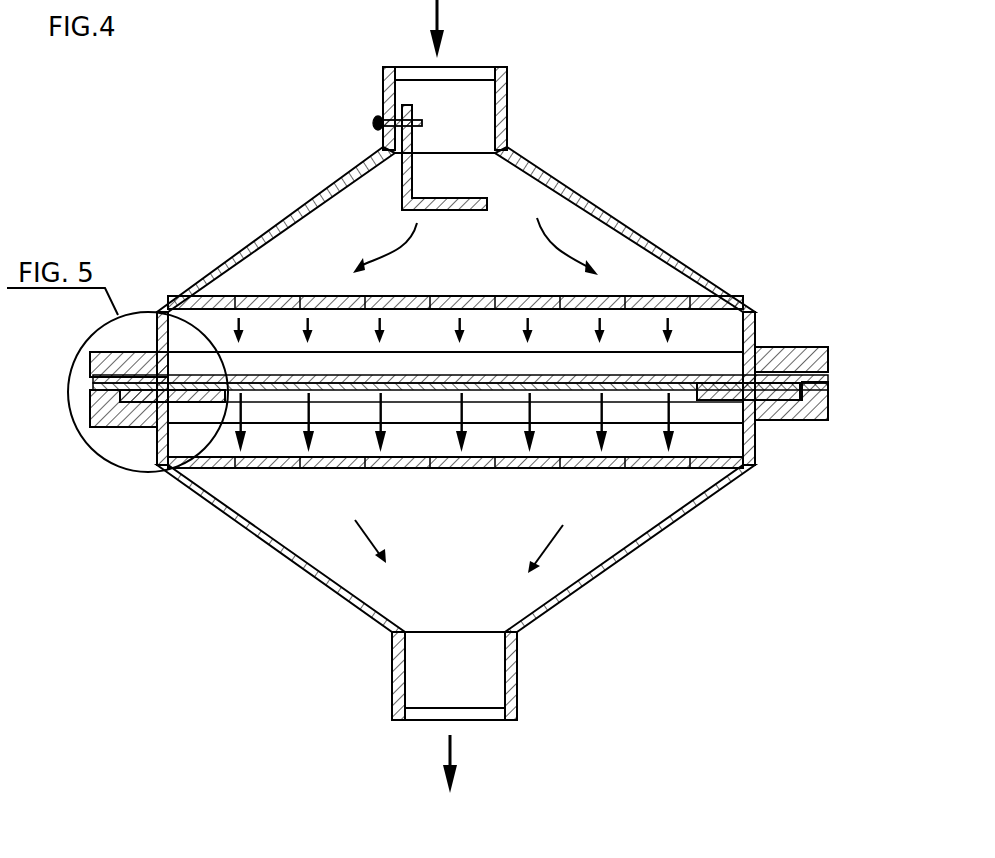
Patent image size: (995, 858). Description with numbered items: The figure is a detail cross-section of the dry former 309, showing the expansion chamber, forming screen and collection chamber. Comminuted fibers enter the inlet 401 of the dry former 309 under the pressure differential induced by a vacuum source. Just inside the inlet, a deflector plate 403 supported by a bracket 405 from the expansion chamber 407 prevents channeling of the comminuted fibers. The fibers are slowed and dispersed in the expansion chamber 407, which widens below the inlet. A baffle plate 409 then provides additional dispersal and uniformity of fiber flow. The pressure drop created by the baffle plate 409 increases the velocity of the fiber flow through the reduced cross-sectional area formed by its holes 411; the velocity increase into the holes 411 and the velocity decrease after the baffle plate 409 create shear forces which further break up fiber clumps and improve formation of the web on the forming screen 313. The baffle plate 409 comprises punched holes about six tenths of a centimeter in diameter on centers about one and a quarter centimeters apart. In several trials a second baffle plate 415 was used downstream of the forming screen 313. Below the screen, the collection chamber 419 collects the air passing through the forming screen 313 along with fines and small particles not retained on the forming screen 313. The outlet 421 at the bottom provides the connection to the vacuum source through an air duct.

The dry former 309 is at (226, 192).
The inlet 401 is at (480, 80).
The deflector plate 403 is at (453, 197).
The bracket 405 is at (400, 173).
The expansion chamber 407 is at (607, 207).
The baffle plate 409 is at (617, 298).
The holes 411 is at (662, 300).
The forming screen 313 is at (667, 373).
The second baffle plate 415 is at (712, 453).
The collection chamber 419 is at (572, 597).
The outlet 421 is at (483, 715).